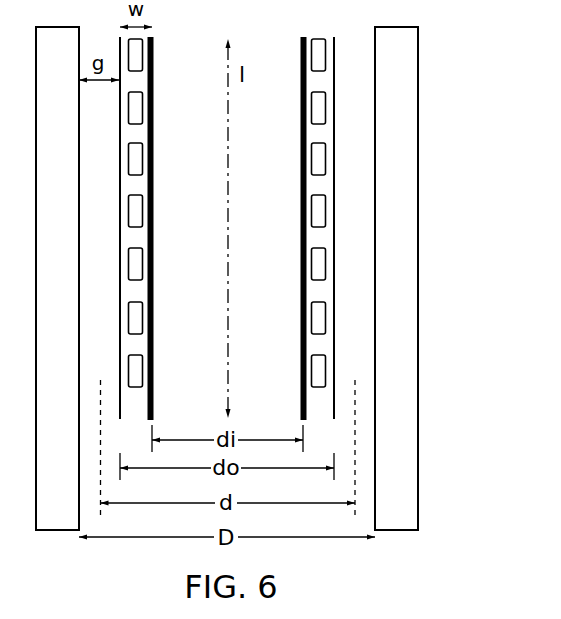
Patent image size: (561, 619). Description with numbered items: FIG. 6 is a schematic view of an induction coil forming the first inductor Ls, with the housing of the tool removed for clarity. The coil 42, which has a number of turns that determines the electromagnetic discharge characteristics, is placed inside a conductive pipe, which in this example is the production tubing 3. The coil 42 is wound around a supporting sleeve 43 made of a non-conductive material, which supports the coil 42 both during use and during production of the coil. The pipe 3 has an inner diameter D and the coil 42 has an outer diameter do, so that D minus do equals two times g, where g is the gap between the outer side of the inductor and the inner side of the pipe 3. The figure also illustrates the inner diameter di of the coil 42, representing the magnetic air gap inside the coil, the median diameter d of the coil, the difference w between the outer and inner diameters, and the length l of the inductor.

The production tubing 3 is at (430, 371).
The coil 42 is at (333, 256).
The supporting sleeve 43 is at (314, 130).